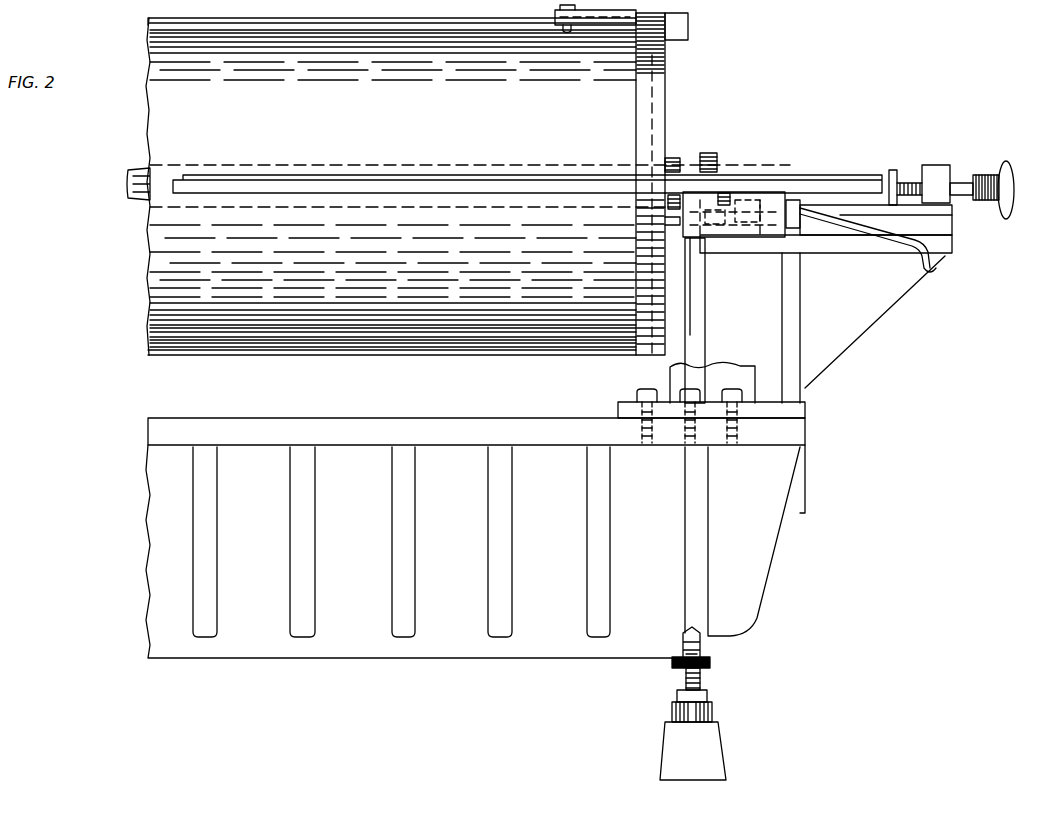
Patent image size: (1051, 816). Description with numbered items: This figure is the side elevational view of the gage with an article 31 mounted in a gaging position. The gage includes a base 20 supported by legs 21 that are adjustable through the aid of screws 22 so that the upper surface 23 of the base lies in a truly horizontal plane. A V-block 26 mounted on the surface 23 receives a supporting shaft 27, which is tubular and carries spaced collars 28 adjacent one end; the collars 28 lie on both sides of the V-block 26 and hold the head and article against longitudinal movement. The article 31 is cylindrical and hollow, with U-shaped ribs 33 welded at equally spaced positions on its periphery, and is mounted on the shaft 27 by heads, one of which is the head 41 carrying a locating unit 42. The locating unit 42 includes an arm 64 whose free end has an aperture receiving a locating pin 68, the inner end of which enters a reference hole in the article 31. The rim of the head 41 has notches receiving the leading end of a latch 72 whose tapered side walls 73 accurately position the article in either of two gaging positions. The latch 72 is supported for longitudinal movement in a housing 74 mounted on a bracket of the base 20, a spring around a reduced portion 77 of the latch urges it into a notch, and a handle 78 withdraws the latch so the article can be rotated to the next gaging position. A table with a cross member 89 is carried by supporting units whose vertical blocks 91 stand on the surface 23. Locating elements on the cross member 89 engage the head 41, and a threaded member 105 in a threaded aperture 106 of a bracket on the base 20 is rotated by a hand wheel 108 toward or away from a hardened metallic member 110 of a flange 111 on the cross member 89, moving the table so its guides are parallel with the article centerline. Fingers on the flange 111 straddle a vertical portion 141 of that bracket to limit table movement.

The base 20 is at (418, 658).
The legs 21 is at (715, 750).
The screws 22 is at (702, 690).
The upper surface 23 is at (454, 420).
The V-block 26 is at (691, 305).
The supporting shaft 27 is at (130, 168).
The collars 28 is at (676, 160).
The article 31 is at (155, 278).
The ribs 33 is at (156, 22).
The head 41 is at (628, 106).
The locating unit 42 is at (690, 42).
The arm 64 is at (642, 12).
The locating pin 68 is at (558, 7).
The latch 72 is at (714, 224).
The side walls 73 is at (672, 226).
The housing 74 is at (745, 205).
The reduced portion 77 is at (745, 222).
The handle 78 is at (934, 268).
The cross member 89 is at (826, 182).
The vertical blocks 91 is at (737, 378).
The threaded member 105 is at (968, 184).
The threaded aperture 106 is at (955, 218).
The hand wheel 108 is at (1006, 180).
The hardened metallic member 110 is at (906, 183).
The flange 111 is at (898, 172).
The vertical portion 141 is at (936, 168).